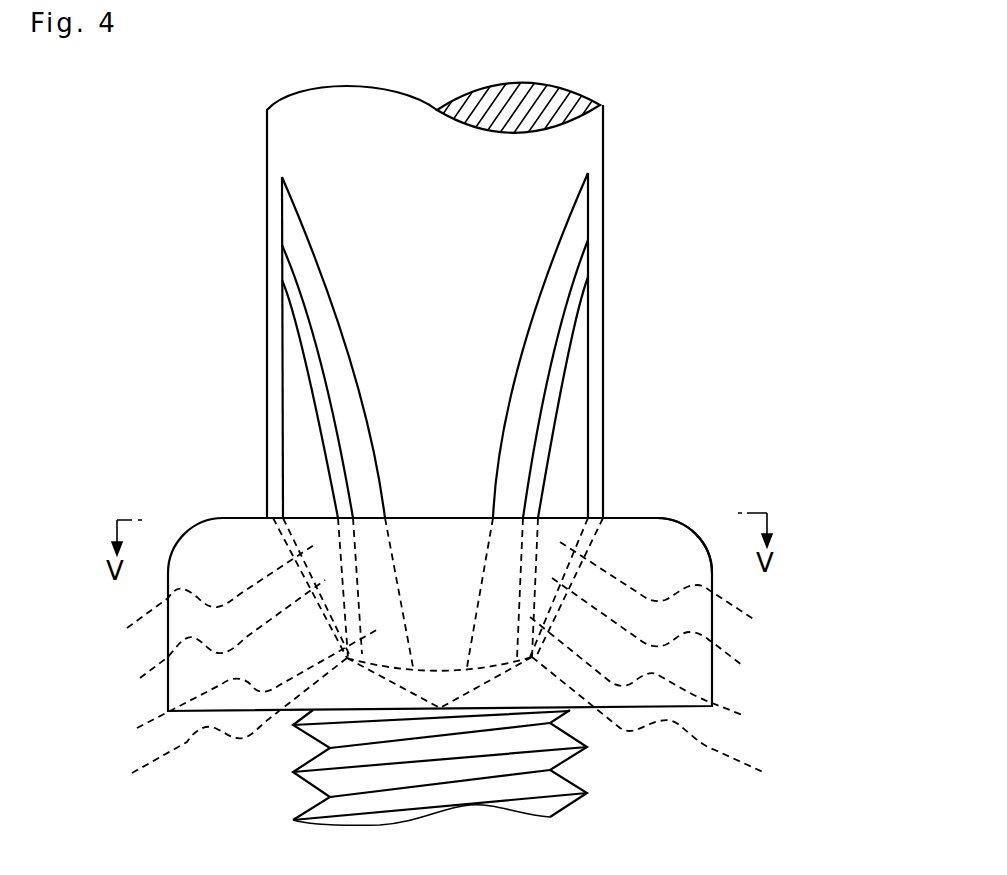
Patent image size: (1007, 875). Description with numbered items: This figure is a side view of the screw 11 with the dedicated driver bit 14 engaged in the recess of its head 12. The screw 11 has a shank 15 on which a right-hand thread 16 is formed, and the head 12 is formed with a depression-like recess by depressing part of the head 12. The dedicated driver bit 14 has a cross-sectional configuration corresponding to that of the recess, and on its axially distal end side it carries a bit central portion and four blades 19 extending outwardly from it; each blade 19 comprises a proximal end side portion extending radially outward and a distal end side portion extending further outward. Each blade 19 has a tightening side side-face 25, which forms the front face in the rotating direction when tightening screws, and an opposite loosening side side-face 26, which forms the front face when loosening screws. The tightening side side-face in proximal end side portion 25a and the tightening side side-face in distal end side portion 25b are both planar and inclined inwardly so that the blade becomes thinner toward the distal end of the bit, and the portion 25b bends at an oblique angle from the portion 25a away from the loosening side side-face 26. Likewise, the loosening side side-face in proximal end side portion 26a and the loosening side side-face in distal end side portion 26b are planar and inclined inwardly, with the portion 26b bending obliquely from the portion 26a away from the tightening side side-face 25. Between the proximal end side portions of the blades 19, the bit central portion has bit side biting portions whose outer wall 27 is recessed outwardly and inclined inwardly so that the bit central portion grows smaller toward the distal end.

The screw 11 is at (183, 538).
The head 12 is at (693, 530).
The dedicated driver bit 14 is at (267, 156).
The shank 15 is at (323, 782).
The thread 16 is at (587, 793).
The blade 19 is at (303, 493).
The tightening side side-face 25 is at (684, 590).
The tightening side side-face in proximal end side portion 25a is at (669, 677).
The tightening side side-face in distal end side portion 25b is at (680, 633).
The loosening side side-face 26 is at (197, 594).
The loosening side side-face in proximal end side portion 26a is at (224, 688).
The loosening side side-face in distal end side portion 26b is at (200, 640).
The outer wall of bit side biting portion 27 is at (442, 727).